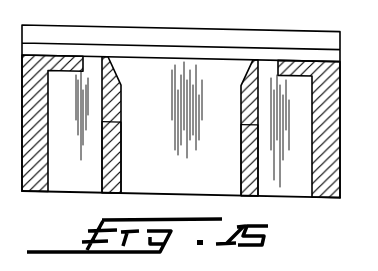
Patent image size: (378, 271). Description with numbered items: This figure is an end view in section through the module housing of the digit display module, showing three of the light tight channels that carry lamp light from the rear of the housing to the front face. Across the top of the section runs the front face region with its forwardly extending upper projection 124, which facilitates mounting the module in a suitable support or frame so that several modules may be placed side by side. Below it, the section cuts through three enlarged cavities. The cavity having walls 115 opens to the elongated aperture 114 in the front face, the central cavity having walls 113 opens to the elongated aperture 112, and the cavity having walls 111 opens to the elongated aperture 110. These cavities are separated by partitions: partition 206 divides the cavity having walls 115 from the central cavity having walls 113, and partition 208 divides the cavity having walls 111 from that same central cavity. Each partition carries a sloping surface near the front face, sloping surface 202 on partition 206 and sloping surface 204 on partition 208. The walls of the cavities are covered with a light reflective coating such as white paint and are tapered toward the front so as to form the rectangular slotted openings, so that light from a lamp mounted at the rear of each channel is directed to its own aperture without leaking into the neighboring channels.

The elongated aperture 110 is at (268, 62).
The cavity walls 111 is at (305, 186).
The elongated aperture 112 is at (190, 65).
The cavity walls 113 is at (193, 183).
The elongated aperture 114 is at (91, 65).
The cavity walls 115 is at (73, 181).
The upper projection 124 is at (186, 32).
The sloping surface 202 is at (120, 78).
The sloping surface 204 is at (241, 78).
The partition 206 is at (121, 166).
The partition 208 is at (241, 157).